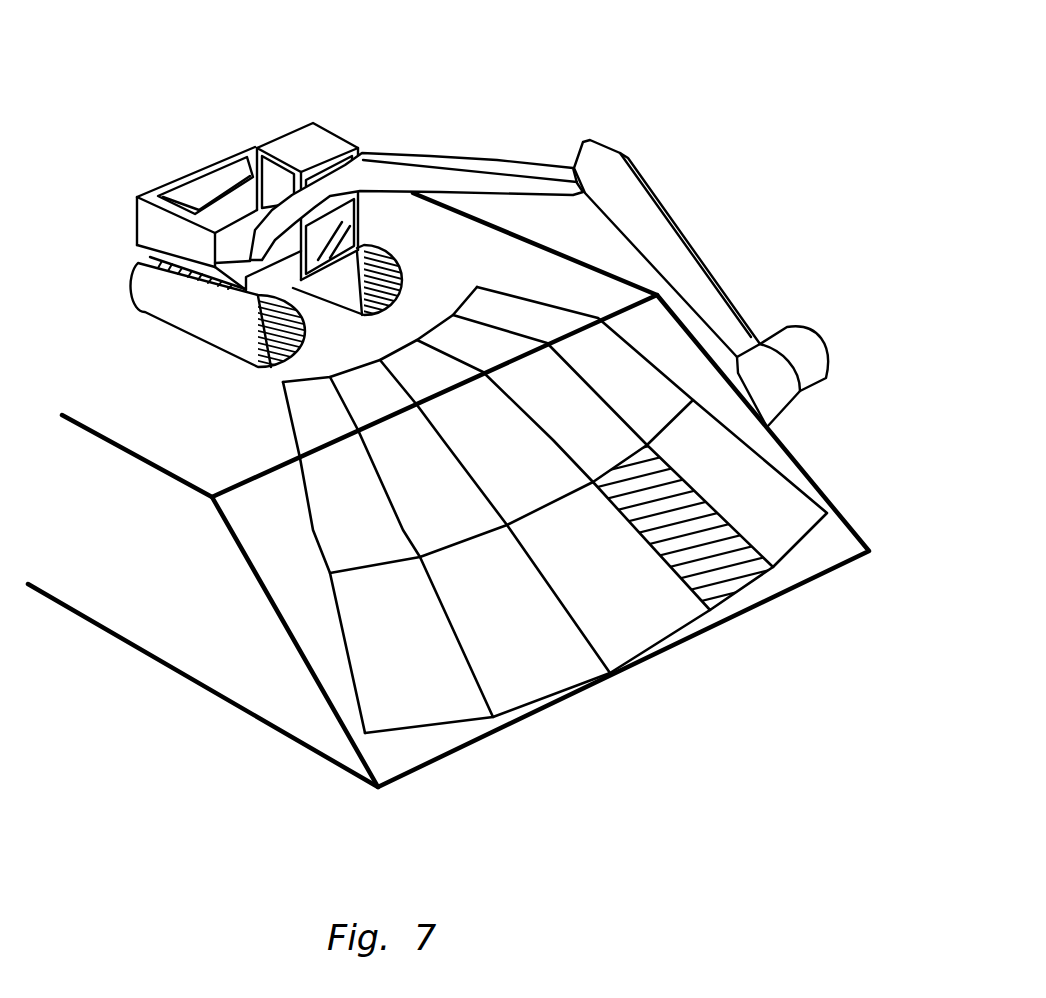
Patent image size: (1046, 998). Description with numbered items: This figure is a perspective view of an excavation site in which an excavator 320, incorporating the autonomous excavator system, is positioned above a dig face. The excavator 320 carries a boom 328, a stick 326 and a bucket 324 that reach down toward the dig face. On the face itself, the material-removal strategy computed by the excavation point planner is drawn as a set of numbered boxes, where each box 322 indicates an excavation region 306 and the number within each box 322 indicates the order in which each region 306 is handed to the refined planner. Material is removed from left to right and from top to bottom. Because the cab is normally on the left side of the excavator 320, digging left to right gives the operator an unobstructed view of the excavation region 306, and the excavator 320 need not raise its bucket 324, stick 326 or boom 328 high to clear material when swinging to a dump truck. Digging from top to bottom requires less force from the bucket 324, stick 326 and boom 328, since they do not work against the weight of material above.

The excavator 320 is at (338, 121).
The boom 328 is at (496, 156).
The stick 326 is at (667, 210).
The bucket 324 is at (805, 352).
The box 322 is at (605, 562).
The excavation region 306 is at (787, 507).